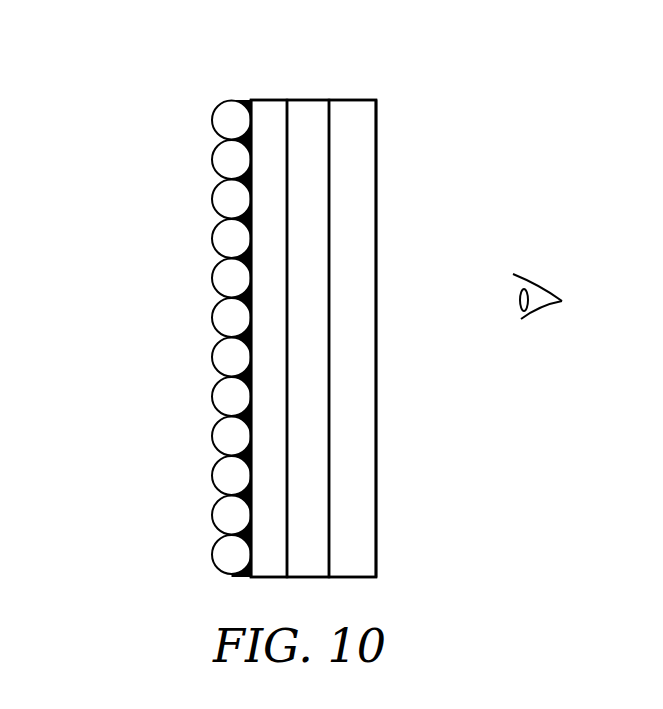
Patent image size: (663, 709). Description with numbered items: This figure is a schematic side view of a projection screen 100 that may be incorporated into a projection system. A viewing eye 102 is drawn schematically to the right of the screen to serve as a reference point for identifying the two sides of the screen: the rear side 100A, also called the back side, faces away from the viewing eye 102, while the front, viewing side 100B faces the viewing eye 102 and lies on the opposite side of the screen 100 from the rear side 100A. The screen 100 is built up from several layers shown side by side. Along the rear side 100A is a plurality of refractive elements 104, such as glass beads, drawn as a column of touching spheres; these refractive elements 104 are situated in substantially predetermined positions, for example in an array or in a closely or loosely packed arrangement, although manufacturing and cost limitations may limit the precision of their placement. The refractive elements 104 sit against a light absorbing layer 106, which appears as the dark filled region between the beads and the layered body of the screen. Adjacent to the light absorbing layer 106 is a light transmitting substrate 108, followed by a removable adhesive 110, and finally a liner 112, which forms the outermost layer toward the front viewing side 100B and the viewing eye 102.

The projection screen 100 is at (388, 155).
The rear side 100A is at (225, 160).
The front viewing side 100B is at (376, 466).
The viewing eye 102 is at (545, 285).
The refractive elements 104 is at (222, 283).
The light absorbing layer 106 is at (245, 100).
The light transmitting substrate 108 is at (269, 100).
The removable adhesive 110 is at (312, 100).
The liner 112 is at (353, 100).